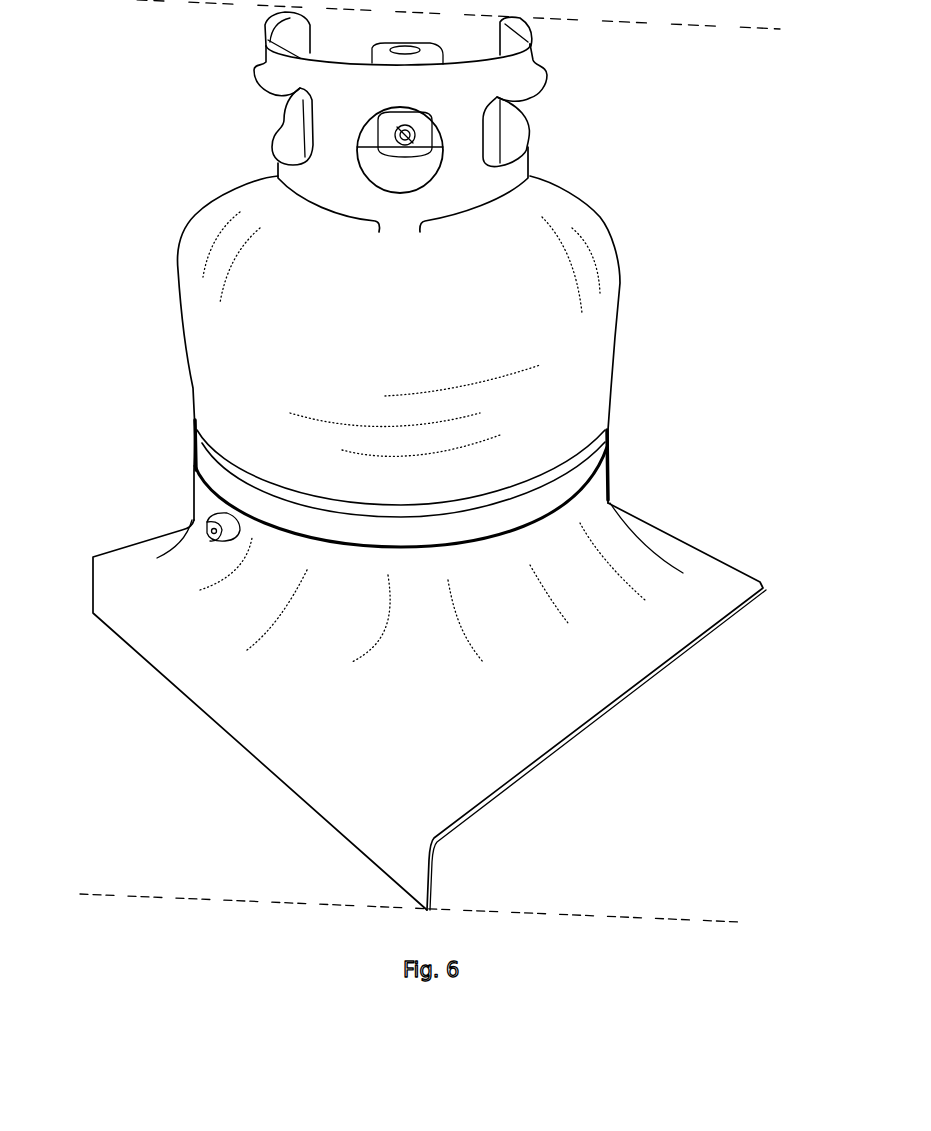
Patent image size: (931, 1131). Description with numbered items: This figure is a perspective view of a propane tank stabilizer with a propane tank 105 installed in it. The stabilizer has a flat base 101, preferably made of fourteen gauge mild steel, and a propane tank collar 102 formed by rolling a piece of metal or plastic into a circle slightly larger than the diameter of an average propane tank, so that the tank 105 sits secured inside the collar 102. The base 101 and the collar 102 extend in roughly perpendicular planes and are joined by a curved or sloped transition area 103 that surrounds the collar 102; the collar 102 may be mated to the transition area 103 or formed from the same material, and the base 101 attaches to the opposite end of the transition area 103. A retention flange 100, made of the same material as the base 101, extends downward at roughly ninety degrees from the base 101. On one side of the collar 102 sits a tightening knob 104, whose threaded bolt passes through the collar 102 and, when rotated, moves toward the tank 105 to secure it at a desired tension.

The retention flange 100 is at (300, 773).
The base 101 is at (145, 548).
The propane tank collar 102 is at (610, 480).
The transition area 103 is at (260, 602).
The tightening knob 104 is at (215, 542).
The propane tank 105 is at (607, 265).